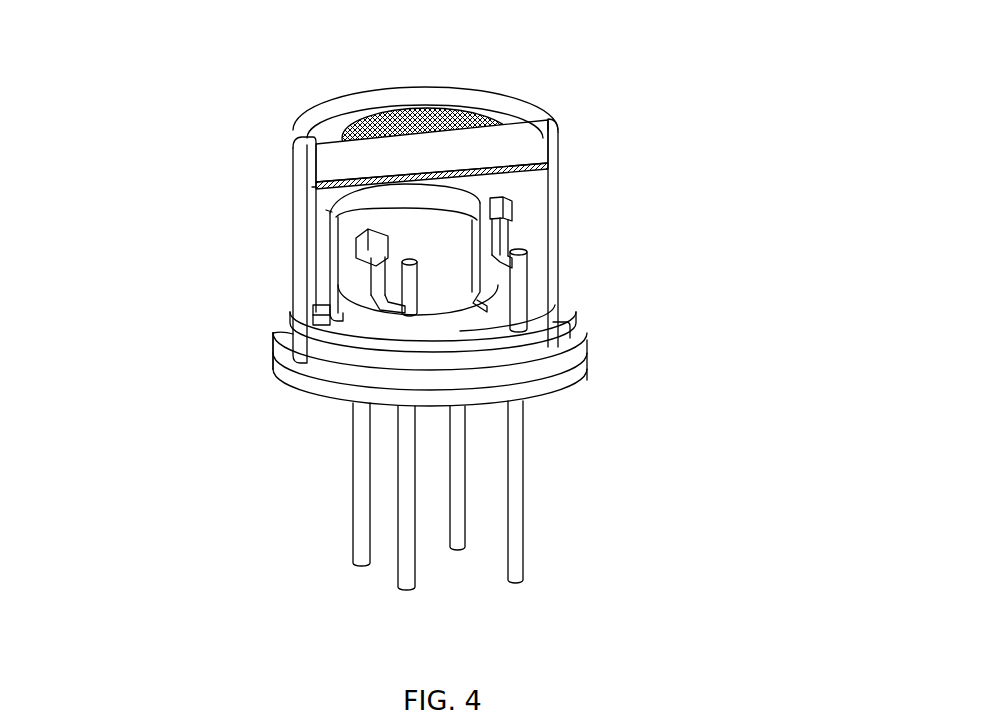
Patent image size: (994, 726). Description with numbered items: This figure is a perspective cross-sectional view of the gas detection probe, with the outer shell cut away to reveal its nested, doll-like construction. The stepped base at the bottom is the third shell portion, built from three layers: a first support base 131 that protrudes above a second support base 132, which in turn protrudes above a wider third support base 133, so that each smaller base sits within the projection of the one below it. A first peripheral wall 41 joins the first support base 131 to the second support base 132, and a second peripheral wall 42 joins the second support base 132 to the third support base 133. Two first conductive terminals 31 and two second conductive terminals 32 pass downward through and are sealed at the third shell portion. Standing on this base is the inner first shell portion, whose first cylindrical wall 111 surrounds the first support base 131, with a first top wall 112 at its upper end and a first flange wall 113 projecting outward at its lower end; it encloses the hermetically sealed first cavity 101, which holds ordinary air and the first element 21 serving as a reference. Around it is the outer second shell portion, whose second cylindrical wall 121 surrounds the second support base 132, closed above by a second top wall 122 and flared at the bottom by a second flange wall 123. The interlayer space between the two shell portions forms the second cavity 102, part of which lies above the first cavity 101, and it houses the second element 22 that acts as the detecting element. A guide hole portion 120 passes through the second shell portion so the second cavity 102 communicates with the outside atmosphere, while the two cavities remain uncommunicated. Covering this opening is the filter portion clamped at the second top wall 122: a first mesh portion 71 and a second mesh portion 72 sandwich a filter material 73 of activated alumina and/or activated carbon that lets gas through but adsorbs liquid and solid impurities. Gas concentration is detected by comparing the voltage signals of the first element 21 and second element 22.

The first cavity 101 is at (360, 207).
The second cavity 102 is at (530, 230).
The first cylindrical wall 111 is at (343, 252).
The first top wall 112 is at (313, 187).
The first flange wall 113 is at (313, 307).
The guide hole portion 120 is at (422, 240).
The second cylindrical wall 121 is at (551, 209).
The second top wall 122 is at (521, 107).
The second flange wall 123 is at (290, 338).
The first support base 131 is at (366, 305).
The second support base 132 is at (553, 332).
The third support base 133 is at (556, 398).
The first element 21 is at (332, 211).
The second element 22 is at (513, 186).
The first conductive terminal 31 is at (357, 510).
The second conductive terminal 32 is at (460, 507).
The first peripheral wall 41 is at (417, 270).
The second peripheral wall 42 is at (540, 355).
The first mesh portion 71 is at (457, 105).
The second mesh portion 72 is at (548, 176).
The filter material 73 is at (528, 138).